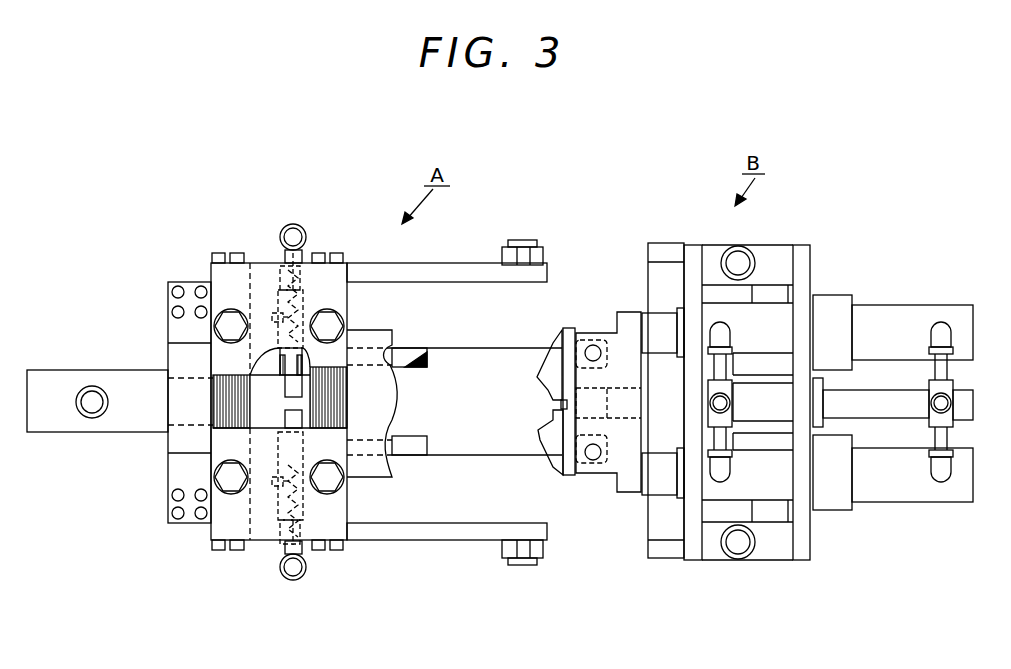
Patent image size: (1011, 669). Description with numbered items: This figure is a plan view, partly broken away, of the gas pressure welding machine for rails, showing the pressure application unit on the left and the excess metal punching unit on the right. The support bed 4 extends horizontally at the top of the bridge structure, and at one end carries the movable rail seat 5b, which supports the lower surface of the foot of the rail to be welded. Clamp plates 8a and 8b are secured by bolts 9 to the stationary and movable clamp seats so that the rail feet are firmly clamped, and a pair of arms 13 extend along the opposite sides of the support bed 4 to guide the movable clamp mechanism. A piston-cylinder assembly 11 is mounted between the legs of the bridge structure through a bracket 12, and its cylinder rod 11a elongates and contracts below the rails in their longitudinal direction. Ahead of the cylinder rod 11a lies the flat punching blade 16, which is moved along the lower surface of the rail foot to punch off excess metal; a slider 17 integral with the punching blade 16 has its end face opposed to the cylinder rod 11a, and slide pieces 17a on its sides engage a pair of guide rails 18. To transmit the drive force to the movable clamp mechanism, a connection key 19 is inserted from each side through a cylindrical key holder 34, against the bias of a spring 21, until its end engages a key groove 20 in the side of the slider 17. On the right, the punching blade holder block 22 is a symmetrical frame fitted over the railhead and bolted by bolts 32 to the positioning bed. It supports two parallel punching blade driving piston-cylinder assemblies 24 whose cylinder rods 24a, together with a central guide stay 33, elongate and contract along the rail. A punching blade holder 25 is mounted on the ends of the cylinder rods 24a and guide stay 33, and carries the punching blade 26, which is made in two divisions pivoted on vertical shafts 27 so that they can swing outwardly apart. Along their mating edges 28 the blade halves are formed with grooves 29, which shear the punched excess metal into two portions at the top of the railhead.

The support bed 4 is at (447, 303).
The movable rail seat 5b is at (213, 428).
The clamp plate 8a is at (668, 278).
The clamp plate 8b is at (226, 268).
The bolt 9 is at (230, 318).
The piston-cylinder assembly 11 is at (66, 422).
The cylinder rod 11a is at (180, 418).
The bracket 12 is at (173, 320).
The arm 13 is at (412, 270).
The punching blade 16 is at (370, 378).
The slider 17 is at (287, 385).
The slide piece 17a is at (280, 365).
The guide rail 18 is at (427, 368).
The connection key 19 is at (291, 248).
The key groove 20 is at (283, 400).
The spring 21 is at (284, 268).
The punching blade holder block 22 is at (802, 255).
The punching blade driving piston-cylinder assembly 24 is at (902, 322).
The cylinder rod 24a is at (663, 320).
The punching blade holder 25 is at (628, 337).
The punching blade 26 is at (566, 352).
The vertical shaft 27 is at (593, 352).
The mating edge 28 is at (550, 440).
The groove 29 is at (540, 365).
The bolt 32 is at (740, 258).
The guide stay 33 is at (973, 400).
The key holder 34 is at (278, 297).